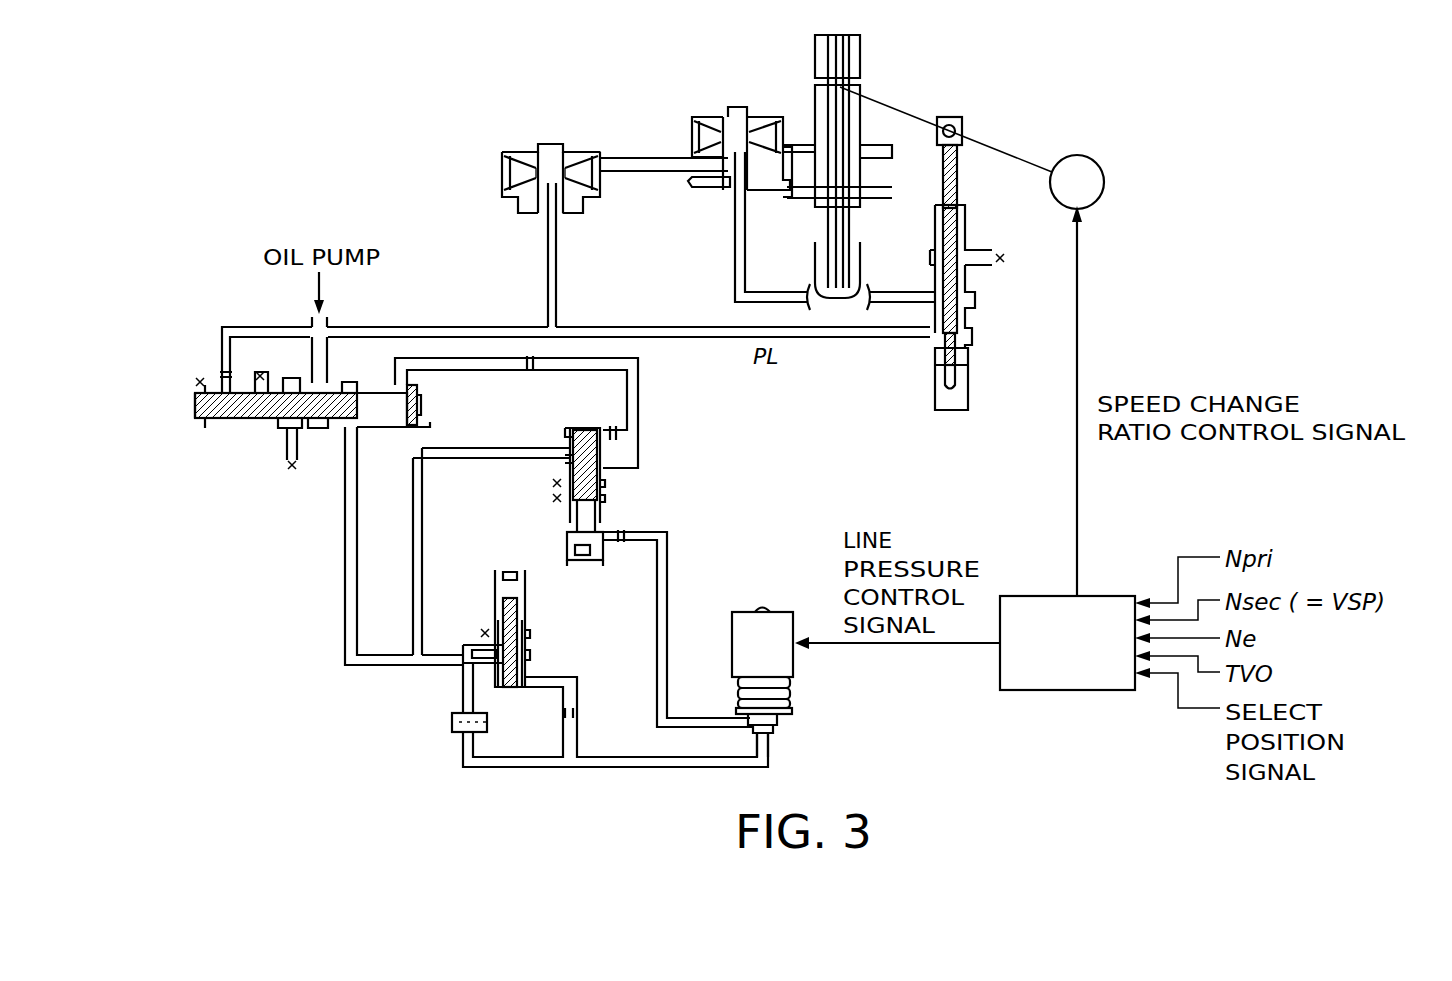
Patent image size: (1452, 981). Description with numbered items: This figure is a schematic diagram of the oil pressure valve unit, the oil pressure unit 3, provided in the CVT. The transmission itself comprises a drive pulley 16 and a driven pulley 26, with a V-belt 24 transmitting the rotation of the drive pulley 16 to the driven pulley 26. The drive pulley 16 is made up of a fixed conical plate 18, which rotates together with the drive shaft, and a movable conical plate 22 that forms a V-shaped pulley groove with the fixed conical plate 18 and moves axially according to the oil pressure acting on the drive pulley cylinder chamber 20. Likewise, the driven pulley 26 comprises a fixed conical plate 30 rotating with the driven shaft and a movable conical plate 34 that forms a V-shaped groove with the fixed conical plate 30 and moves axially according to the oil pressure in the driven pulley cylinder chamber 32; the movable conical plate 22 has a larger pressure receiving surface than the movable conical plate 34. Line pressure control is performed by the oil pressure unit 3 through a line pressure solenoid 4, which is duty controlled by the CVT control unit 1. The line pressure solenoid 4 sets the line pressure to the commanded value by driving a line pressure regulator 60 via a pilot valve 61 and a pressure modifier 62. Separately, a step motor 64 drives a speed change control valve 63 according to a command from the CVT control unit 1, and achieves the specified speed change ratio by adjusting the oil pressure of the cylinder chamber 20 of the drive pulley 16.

The CVT control unit 1 is at (1020, 595).
The oil pressure unit 3 is at (314, 606).
The line pressure solenoid 4 is at (742, 610).
The drive pulley 16 is at (709, 200).
The fixed conical plate 18 is at (702, 182).
The drive pulley cylinder chamber 20 is at (703, 117).
The movable conical plate 22 is at (690, 148).
The V-belt 24 is at (637, 157).
The driven pulley 26 is at (516, 144).
The fixed conical plate 30 is at (580, 150).
The driven pulley cylinder chamber 32 is at (590, 195).
The movable conical plate 34 is at (600, 172).
The line pressure regulator 60 is at (253, 420).
The pilot valve 61 is at (530, 632).
The pressure modifier 62 is at (605, 502).
The speed change control valve 63 is at (970, 298).
The step motor 64 is at (1105, 182).